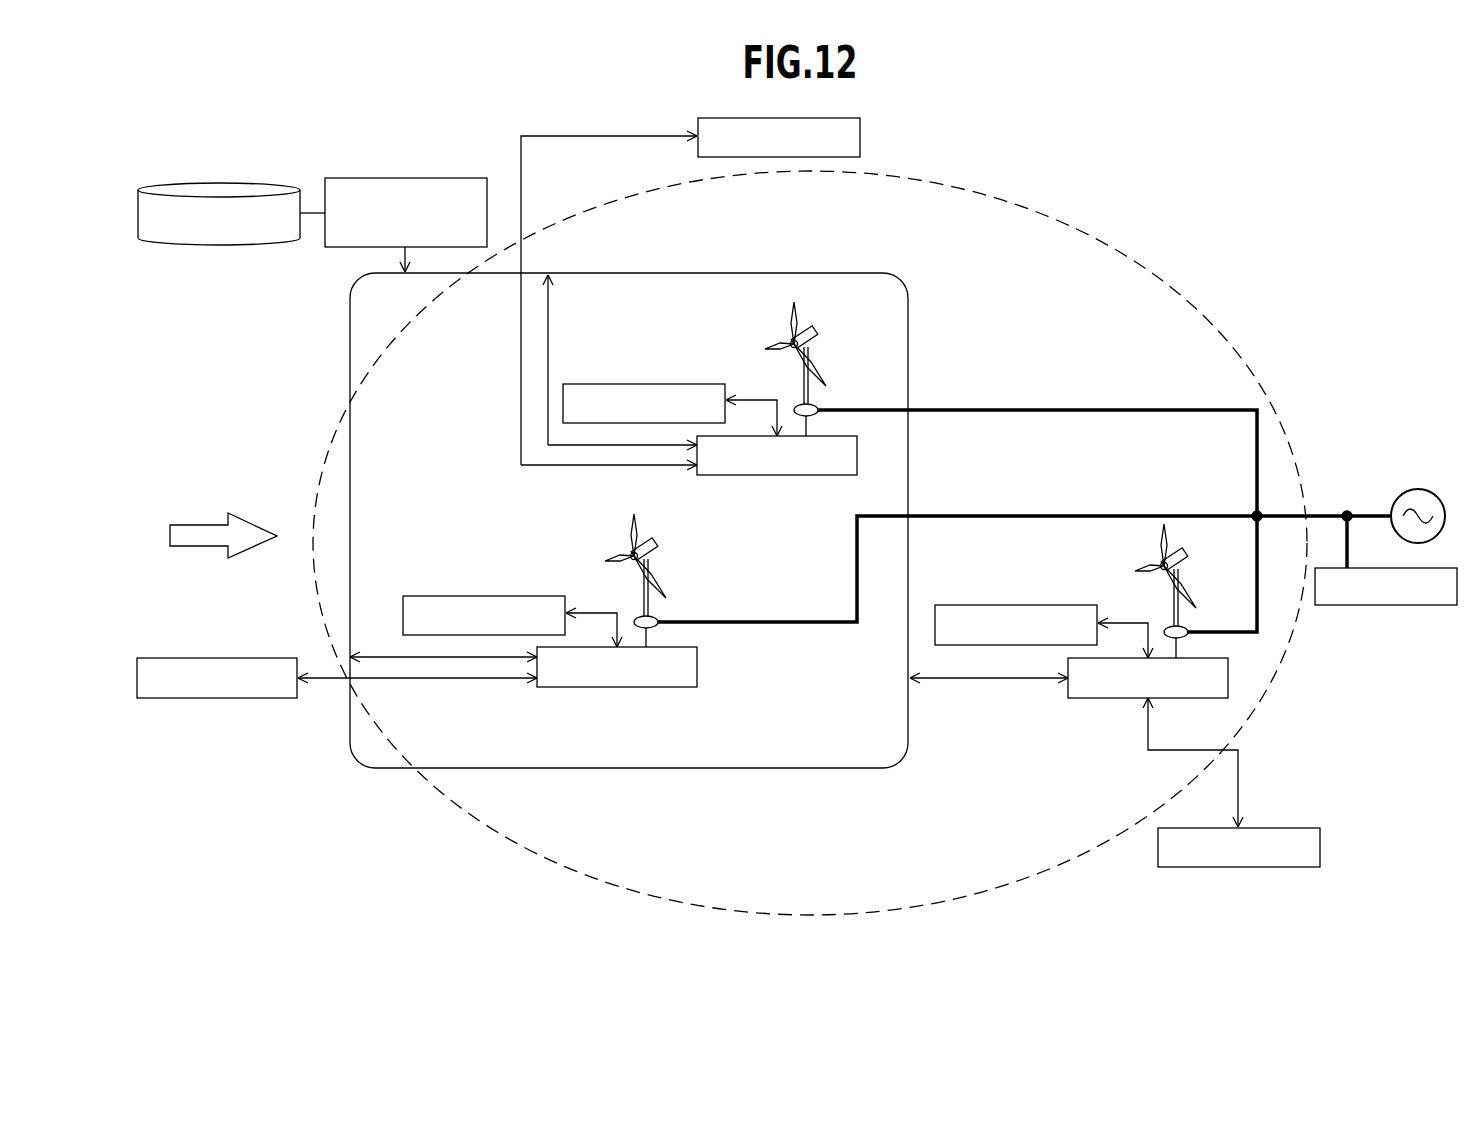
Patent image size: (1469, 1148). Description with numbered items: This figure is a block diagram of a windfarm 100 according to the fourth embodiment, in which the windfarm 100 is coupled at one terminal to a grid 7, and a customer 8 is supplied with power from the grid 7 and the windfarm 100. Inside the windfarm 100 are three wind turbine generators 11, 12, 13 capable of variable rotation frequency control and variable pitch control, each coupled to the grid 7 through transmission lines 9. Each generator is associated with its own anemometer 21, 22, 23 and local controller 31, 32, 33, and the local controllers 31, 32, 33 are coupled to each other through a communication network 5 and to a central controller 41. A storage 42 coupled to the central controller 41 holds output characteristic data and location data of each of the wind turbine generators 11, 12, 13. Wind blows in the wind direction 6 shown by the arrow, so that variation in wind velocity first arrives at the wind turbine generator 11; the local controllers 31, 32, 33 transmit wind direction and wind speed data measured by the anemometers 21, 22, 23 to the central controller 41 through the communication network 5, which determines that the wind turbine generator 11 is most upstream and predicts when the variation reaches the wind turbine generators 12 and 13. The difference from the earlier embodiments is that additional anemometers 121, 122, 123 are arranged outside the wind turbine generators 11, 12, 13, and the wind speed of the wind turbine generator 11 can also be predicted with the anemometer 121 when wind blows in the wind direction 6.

The communication network 5 is at (814, 272).
The wind direction 6 is at (192, 524).
The grid 7 is at (1429, 489).
The customer 8 is at (1372, 607).
The transmission lines 9 is at (1104, 408).
The wind turbine generator 11 is at (654, 543).
The wind turbine generator 12 is at (815, 325).
The wind turbine generator 13 is at (1178, 558).
The anemometer 21 is at (511, 594).
The anemometer 22 is at (685, 384).
The anemometer 23 is at (1047, 605).
The local controller 31 is at (618, 689).
The local controller 32 is at (775, 478).
The local controller 33 is at (1100, 700).
The central controller 41 is at (359, 178).
The storage 42 is at (258, 180).
The windfarm 100 is at (1085, 230).
The anemometer 121 is at (250, 700).
The anemometer 122 is at (862, 133).
The anemometer 123 is at (1276, 826).